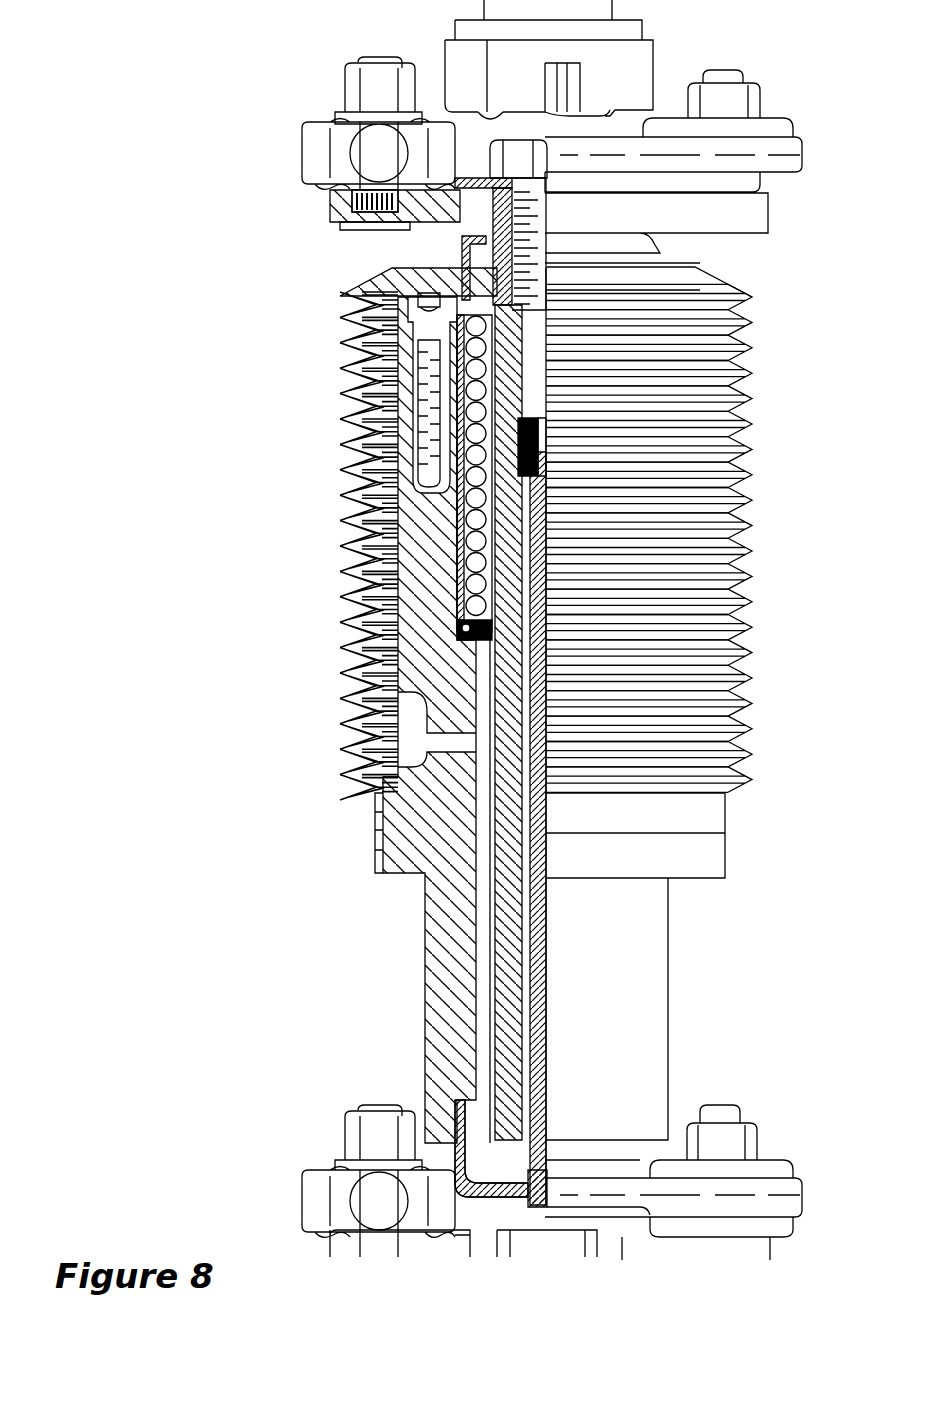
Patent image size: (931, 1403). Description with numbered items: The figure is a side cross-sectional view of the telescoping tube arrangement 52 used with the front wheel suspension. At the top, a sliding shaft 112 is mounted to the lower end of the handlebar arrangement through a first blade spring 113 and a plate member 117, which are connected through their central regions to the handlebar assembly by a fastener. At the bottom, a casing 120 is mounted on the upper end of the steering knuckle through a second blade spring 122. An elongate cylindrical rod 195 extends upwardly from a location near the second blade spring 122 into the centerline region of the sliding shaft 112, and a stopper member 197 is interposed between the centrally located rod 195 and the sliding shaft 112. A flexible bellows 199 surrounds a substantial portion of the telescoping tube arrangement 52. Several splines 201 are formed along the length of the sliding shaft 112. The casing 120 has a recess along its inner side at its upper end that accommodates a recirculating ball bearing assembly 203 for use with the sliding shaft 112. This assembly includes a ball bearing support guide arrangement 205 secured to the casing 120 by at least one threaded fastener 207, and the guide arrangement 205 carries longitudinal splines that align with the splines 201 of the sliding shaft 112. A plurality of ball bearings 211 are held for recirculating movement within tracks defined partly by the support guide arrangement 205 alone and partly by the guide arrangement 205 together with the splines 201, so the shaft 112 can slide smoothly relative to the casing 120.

The telescoping tube arrangement 52 is at (272, 712).
The first blade spring 113 is at (302, 144).
The plate member 117 is at (330, 206).
The sliding shaft 112 is at (462, 242).
The casing 120 is at (396, 456).
The recirculating ball bearing assembly 203 is at (452, 505).
The threaded fastener 207 is at (440, 405).
The ball bearing support guide arrangement 205 is at (432, 362).
The ball bearings 211 is at (460, 600).
The splines 201 is at (492, 897).
The elongate cylindrical rod 195 is at (542, 942).
The stopper member 197 is at (547, 479).
The flexible bellows 199 is at (735, 382).
The second blade spring 122 is at (302, 1182).